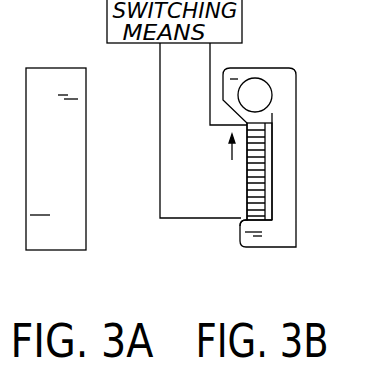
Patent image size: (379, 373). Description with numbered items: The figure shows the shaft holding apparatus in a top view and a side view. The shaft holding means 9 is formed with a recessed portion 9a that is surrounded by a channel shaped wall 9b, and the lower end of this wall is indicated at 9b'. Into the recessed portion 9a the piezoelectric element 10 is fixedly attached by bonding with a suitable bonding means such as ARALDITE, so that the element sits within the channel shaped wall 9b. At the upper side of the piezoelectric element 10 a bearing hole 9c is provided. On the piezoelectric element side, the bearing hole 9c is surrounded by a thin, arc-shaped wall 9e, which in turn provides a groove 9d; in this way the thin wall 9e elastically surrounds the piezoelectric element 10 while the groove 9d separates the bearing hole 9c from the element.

In FIG. 3A, the shaft holding means 9 is at (63, 174).
In FIG. 3B, the shaft holding means 9 is at (270, 170).
In FIG. 3B, the recessed portion 9a is at (268, 164).
In FIG. 3B, the channel shaped wall 9b is at (299, 170).
In FIG. 3B, the lower end of slot 9b' is at (226, 235).
In FIG. 3B, the bearing hole 9c is at (256, 93).
In FIG. 3B, the groove 9d is at (270, 121).
In FIG. 3B, the thin arc-shaped wall 9e is at (225, 103).
In FIG. 3B, the piezoelectric element 10 is at (253, 179).